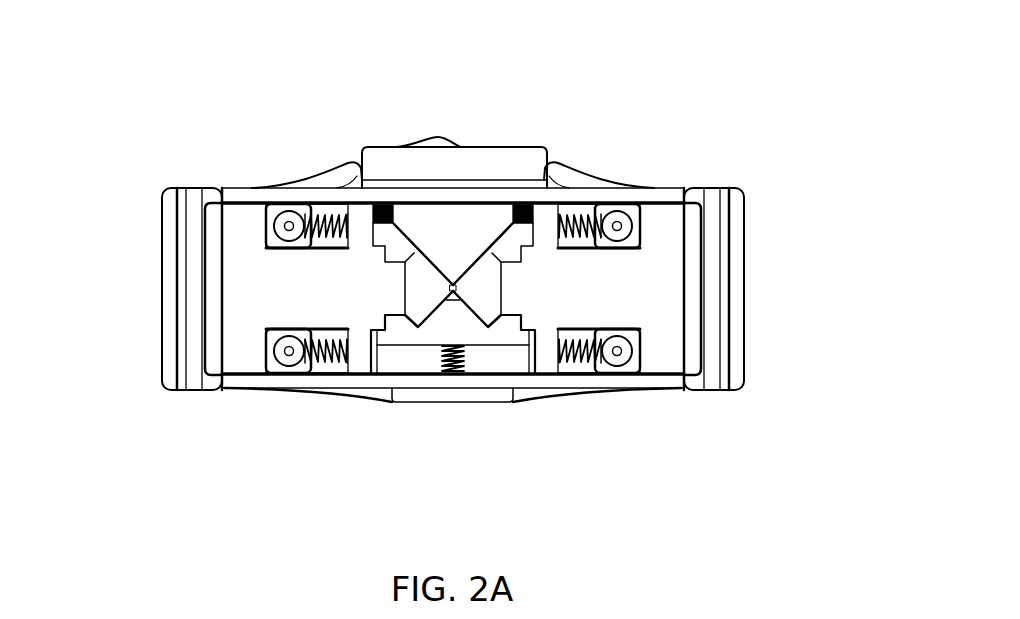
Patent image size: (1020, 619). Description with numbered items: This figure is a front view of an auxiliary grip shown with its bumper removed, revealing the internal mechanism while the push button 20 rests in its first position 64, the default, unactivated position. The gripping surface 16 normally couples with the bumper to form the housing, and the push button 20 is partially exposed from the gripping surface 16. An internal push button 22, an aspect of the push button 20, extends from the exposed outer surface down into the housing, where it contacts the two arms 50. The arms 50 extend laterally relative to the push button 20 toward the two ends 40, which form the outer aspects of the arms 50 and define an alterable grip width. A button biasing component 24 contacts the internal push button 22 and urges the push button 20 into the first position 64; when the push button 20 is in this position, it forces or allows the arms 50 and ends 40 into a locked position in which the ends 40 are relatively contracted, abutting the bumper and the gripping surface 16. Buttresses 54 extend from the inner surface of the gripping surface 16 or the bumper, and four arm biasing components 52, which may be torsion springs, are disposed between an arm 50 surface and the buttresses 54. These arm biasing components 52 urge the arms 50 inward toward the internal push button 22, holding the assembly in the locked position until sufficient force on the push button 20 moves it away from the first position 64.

The gripping surface 16 is at (512, 195).
The push button 20 is at (486, 162).
The internal push button 22 is at (413, 220).
The button biasing component 24 is at (453, 374).
The ends 40 is at (728, 279).
The arms 50 is at (637, 310).
The arm biasing components 52 is at (313, 236).
The buttresses 54 is at (297, 230).
The first position 64 is at (375, 137).